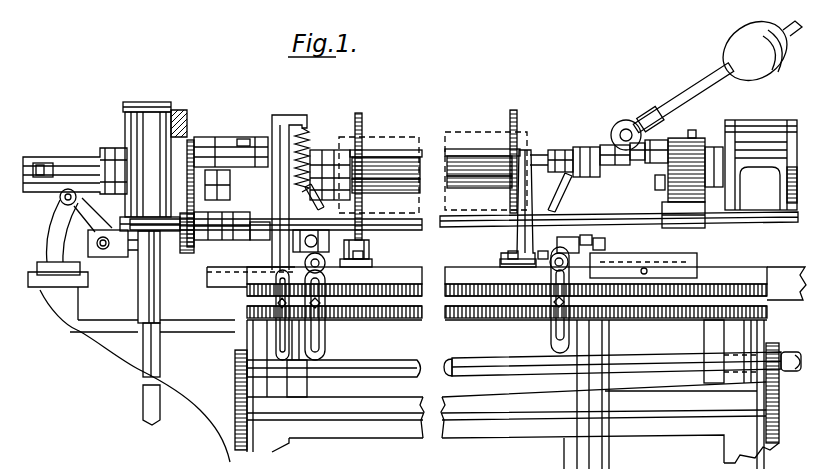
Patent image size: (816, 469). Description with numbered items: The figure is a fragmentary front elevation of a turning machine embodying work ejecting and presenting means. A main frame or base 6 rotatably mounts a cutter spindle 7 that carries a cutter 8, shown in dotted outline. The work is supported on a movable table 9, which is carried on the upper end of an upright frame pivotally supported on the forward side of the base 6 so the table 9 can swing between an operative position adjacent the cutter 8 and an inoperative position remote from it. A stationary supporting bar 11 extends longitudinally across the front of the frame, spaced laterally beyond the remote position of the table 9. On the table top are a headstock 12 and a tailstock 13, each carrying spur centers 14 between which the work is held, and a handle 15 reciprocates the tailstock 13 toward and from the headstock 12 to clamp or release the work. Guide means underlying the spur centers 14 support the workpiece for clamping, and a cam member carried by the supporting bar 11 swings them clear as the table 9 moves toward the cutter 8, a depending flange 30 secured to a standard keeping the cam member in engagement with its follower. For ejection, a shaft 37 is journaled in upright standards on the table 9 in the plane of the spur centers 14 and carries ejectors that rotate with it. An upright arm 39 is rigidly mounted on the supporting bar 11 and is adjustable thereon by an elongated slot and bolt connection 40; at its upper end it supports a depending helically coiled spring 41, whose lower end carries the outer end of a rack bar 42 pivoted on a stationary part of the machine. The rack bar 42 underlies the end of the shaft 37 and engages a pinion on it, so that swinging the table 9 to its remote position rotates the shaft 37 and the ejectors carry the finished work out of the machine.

The main frame or base 6 is at (197, 367).
The cutter spindle 7 is at (455, 148).
The cutter 8 is at (486, 145).
The movable table 9 is at (392, 278).
The stationary supporting bar 11 is at (406, 321).
The headstock 12 is at (226, 137).
The tailstock 13 is at (635, 118).
The spur centers 14 is at (560, 148).
The handle 15 is at (766, 79).
The depending flange 30 is at (590, 262).
The shaft 37 is at (396, 152).
The upright arm 39 is at (288, 115).
The elongated slot and bolt connection 40 is at (247, 290).
The helically coiled spring 41 is at (312, 138).
The rack bar 42 is at (326, 150).